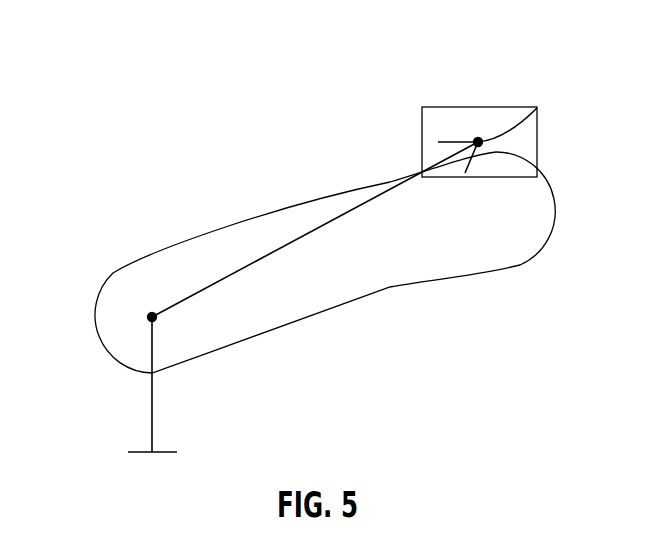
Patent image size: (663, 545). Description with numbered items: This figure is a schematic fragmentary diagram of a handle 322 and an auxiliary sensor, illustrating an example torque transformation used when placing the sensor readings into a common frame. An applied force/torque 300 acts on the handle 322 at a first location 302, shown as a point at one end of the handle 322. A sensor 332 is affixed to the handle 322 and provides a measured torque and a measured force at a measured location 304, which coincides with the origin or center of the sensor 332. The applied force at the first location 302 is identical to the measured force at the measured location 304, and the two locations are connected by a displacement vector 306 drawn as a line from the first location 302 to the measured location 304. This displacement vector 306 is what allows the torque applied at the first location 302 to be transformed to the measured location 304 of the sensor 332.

The applied force/torque 300 is at (142, 413).
The first location 302 is at (140, 307).
The measured location 304 is at (537, 108).
The displacement vector 306 is at (250, 233).
The handle 322 is at (453, 275).
The sensor 332 is at (480, 106).